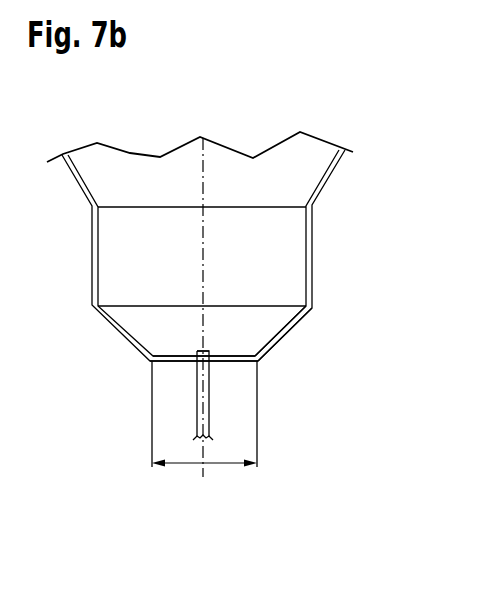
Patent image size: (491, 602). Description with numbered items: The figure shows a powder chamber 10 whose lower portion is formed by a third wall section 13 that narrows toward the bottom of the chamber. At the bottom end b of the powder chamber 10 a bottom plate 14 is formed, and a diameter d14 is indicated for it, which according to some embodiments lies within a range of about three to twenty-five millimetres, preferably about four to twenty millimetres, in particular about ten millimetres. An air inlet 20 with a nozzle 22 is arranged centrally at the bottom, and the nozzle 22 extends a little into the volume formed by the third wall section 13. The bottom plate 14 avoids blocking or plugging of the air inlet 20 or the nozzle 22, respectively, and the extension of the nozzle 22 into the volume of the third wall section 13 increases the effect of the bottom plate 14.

The powder chamber 10 is at (343, 238).
The third wall section 13 is at (290, 332).
The bottom plate 14 is at (222, 362).
The air inlet 20 is at (197, 372).
The nozzle 22 is at (206, 350).
The bottom end b is at (162, 401).
The diameter d14 is at (218, 464).